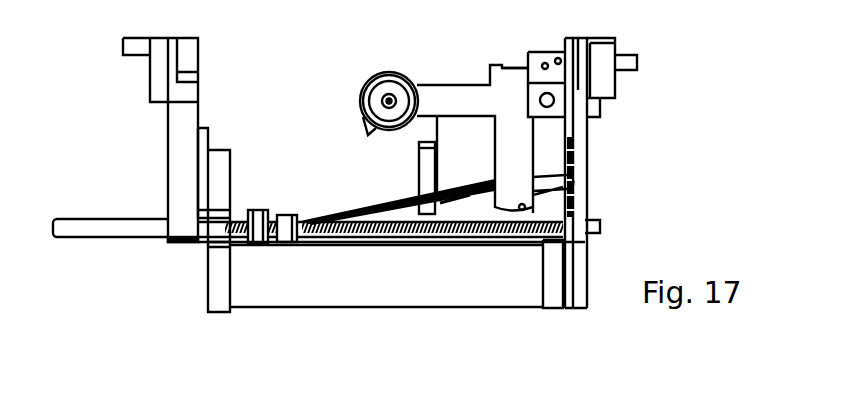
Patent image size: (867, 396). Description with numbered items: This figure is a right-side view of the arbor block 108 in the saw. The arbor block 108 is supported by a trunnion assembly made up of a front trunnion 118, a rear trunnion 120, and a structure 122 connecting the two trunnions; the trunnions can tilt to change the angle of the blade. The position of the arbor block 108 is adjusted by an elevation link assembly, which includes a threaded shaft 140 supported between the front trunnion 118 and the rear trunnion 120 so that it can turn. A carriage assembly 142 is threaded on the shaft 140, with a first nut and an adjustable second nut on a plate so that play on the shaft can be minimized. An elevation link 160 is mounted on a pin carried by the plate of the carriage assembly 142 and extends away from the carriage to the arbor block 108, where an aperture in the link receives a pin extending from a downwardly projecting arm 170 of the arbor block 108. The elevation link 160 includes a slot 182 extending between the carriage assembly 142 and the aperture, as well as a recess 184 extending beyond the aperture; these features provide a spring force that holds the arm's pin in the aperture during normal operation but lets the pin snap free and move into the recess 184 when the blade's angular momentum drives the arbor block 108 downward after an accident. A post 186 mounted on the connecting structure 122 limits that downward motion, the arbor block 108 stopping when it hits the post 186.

The arbor block 108 is at (457, 92).
The front trunnion 118 is at (180, 142).
The rear trunnion 120 is at (600, 152).
The structure connecting the two trunnions 122 is at (300, 273).
The threaded shaft 140 is at (83, 227).
The carriage assembly 142 is at (278, 207).
The elevation link 160 is at (397, 208).
The downwardly projecting arm 170 is at (512, 132).
The slot 182 is at (472, 235).
The recess 184 is at (585, 192).
The post 186 is at (429, 143).